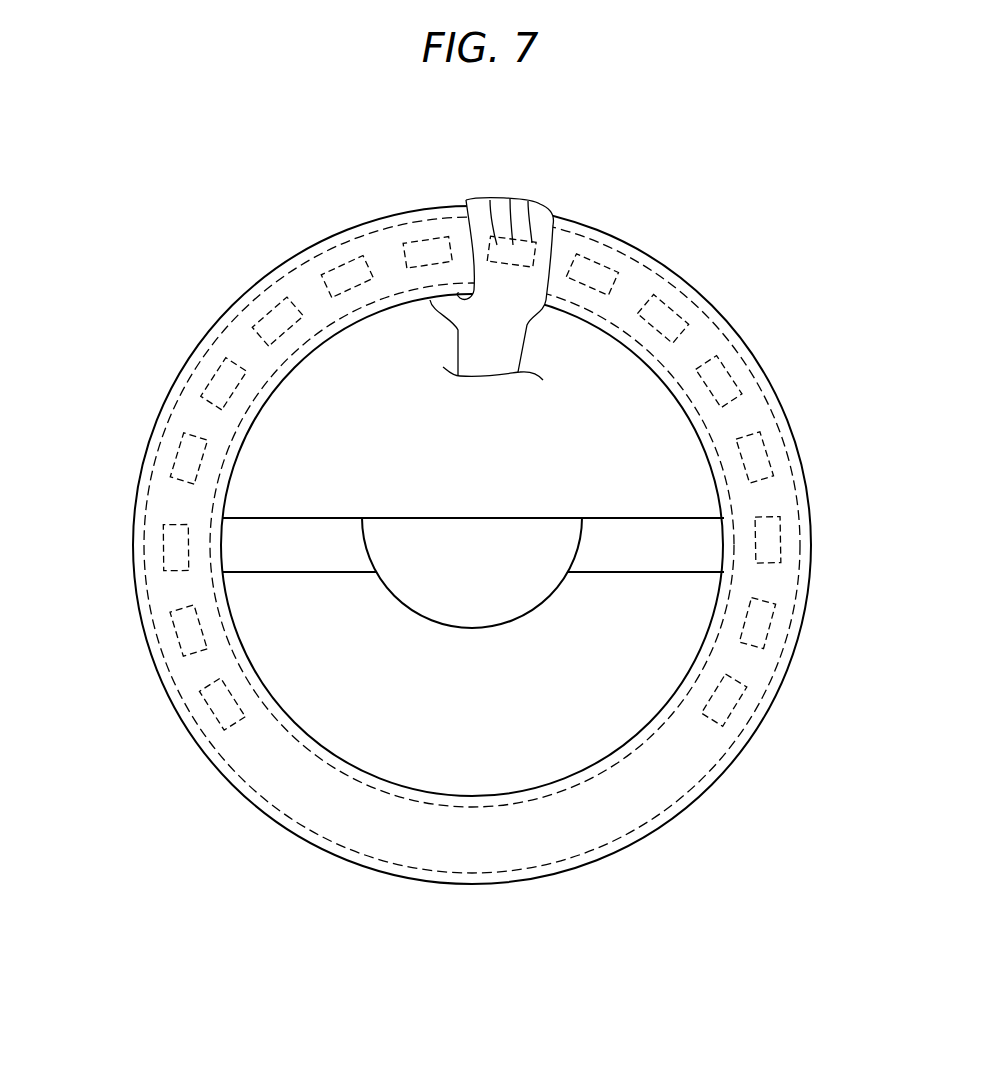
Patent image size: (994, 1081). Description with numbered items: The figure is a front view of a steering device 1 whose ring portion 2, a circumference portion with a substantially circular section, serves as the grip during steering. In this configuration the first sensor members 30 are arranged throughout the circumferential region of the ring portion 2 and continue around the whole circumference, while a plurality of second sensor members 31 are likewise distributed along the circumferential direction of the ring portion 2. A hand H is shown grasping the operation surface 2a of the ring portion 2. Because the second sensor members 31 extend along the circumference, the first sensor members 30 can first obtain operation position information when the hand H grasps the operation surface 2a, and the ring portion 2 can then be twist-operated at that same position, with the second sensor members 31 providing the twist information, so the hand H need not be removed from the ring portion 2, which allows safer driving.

The steering device 1 is at (472, 541).
The ring portion 2 is at (717, 783).
The operation surface 2a is at (583, 838).
The first sensor members 30 is at (330, 840).
The second sensor members 31 is at (735, 707).
The hand H is at (507, 333).